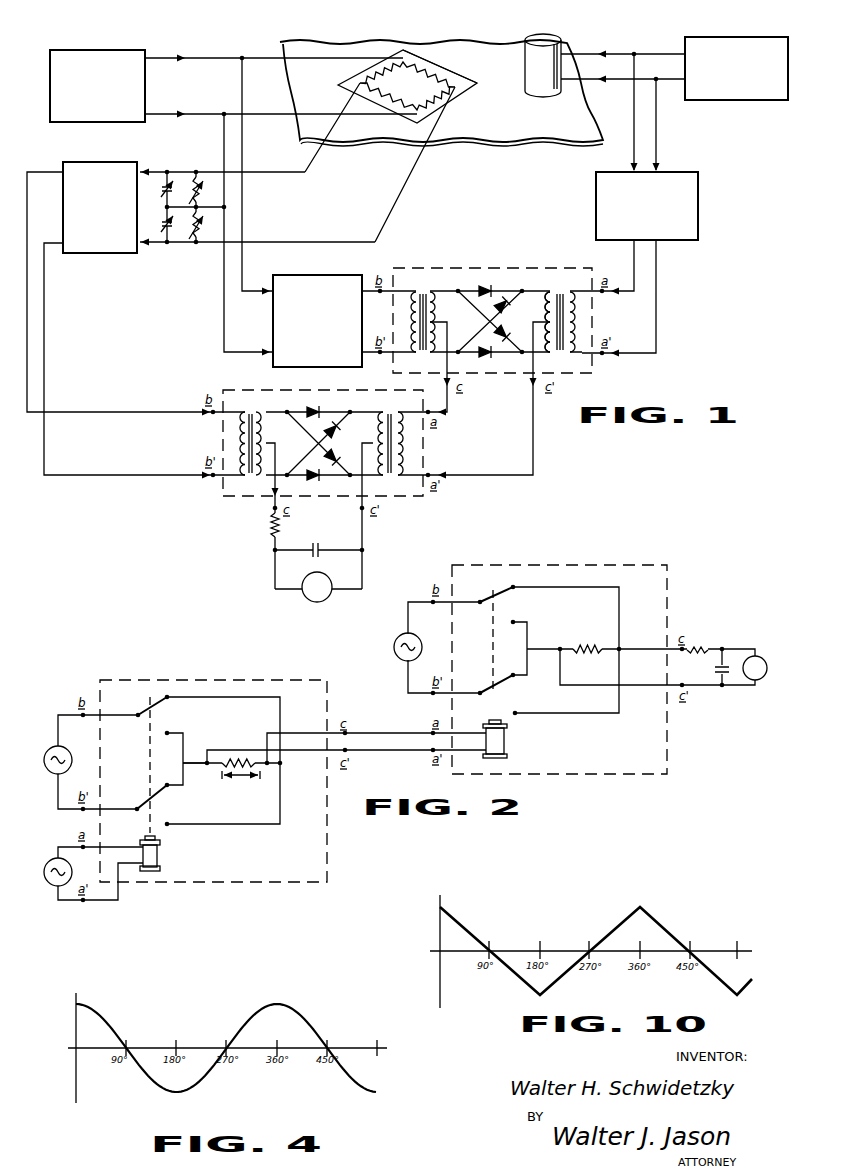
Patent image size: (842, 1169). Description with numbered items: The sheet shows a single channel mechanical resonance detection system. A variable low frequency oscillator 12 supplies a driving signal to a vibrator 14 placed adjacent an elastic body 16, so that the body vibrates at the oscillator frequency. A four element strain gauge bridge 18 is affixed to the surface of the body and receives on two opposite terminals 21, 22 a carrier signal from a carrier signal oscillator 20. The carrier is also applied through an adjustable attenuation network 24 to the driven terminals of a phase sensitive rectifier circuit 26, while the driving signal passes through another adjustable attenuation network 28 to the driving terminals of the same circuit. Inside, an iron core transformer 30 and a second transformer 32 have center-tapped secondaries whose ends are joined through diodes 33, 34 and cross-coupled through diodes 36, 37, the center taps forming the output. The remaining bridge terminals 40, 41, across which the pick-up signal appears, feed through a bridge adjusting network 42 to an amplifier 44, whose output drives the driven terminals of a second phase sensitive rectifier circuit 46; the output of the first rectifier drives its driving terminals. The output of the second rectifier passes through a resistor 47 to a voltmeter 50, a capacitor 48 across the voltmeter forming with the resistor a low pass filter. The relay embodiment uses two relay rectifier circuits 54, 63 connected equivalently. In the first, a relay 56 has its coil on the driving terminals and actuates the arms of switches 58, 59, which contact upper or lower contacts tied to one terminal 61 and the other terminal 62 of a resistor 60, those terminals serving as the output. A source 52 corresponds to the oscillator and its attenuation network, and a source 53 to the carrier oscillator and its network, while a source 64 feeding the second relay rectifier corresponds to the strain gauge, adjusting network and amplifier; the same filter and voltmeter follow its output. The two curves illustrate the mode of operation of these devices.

In FIG. 1, the variable low frequency oscillator 12 is at (716, 37).
In FIG. 1, the vibrator 14 is at (524, 90).
In FIG. 1, the elastic body 16 is at (464, 48).
In FIG. 1, the four element strain gauge bridge 18 is at (420, 51).
In FIG. 1, the carrier signal oscillator 20 is at (91, 52).
In FIG. 1, the bridge terminal 21 is at (405, 85).
In FIG. 1, the bridge terminal 22 is at (434, 106).
In FIG. 1, the adjustable attenuation network 24 is at (306, 275).
In FIG. 1, the phase sensitive rectifier circuit 26 is at (444, 273).
In FIG. 1, the adjustable attenuation network 28 is at (698, 200).
In FIG. 1, the iron core transformer 30 is at (432, 271).
In FIG. 1, the transformer 32 is at (592, 373).
In FIG. 1, the diode 33 is at (485, 284).
In FIG. 1, the diode 34 is at (492, 357).
In FIG. 1, the diode 36 is at (547, 301).
In FIG. 1, the diode 37 is at (490, 326).
In FIG. 1, the bridge terminal 40 is at (346, 82).
In FIG. 1, the bridge terminal 41 is at (468, 82).
In FIG. 1, the bridge adjusting network 42 is at (188, 247).
In FIG. 1, the amplifier 44 is at (108, 255).
In FIG. 1, the phase sensitive rectifier circuit 46 is at (419, 498).
In FIG. 1, the resistor 47 is at (271, 530).
In FIG. 2, the resistor 47 is at (702, 647).
In FIG. 1, the capacitor 48 is at (320, 549).
In FIG. 2, the capacitor 48 is at (721, 684).
In FIG. 1, the voltmeter 50 is at (310, 600).
In FIG. 2, the voltmeter 50 is at (765, 657).
In FIG. 2, the source of alternating current signal 52 is at (50, 864).
In FIG. 2, the source of alternating current signals 53 is at (50, 749).
In FIG. 2, the relay rectifier circuit 54 is at (215, 882).
In FIG. 2, the relay 56 is at (166, 852).
In FIG. 2, the switch 58 is at (150, 705).
In FIG. 2, the switch 59 is at (150, 793).
In FIG. 2, the resistor 60 is at (235, 759).
In FIG. 2, the resistor terminal 61 is at (202, 760).
In FIG. 2, the resistor terminal 62 is at (277, 773).
In FIG. 2, the relay rectifier circuit 63 is at (605, 774).
In FIG. 2, the source of alternating current signals 64 is at (396, 648).